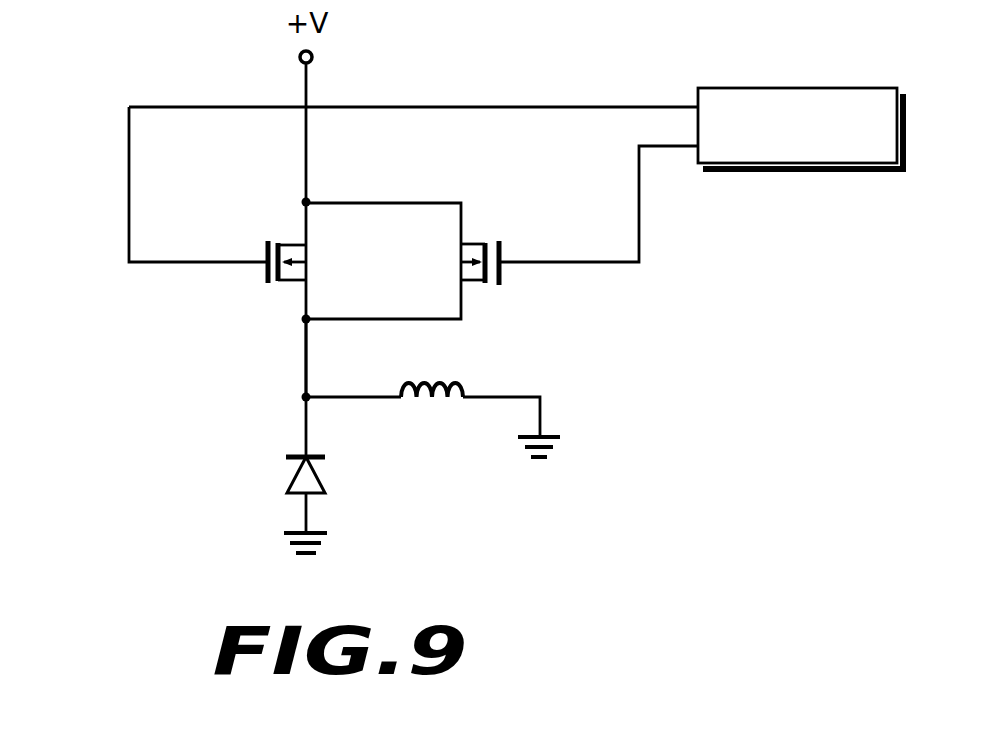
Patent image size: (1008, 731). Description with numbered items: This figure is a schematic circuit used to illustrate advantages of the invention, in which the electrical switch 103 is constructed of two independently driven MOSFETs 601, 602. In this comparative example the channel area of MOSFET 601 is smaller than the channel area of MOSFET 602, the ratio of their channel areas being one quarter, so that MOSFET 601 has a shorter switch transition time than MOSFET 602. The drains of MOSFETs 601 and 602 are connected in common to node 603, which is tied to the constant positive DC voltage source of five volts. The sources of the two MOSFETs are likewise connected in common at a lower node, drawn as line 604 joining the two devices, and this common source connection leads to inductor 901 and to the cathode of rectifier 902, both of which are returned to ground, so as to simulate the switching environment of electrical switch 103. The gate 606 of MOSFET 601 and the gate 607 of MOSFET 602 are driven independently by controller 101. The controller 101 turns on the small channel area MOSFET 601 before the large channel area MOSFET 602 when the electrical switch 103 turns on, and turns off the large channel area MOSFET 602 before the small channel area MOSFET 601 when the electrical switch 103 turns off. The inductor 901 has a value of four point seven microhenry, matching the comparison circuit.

The controller 101 is at (817, 87).
The electrical switch 103 is at (270, 345).
The MOSFET 601 is at (265, 275).
The MOSFET 602 is at (518, 232).
The node 603 is at (360, 203).
The lower connection line 604 is at (358, 318).
The gate 606 is at (128, 197).
The gate 607 is at (640, 215).
The inductor 901 is at (433, 378).
The rectifier 902 is at (320, 450).